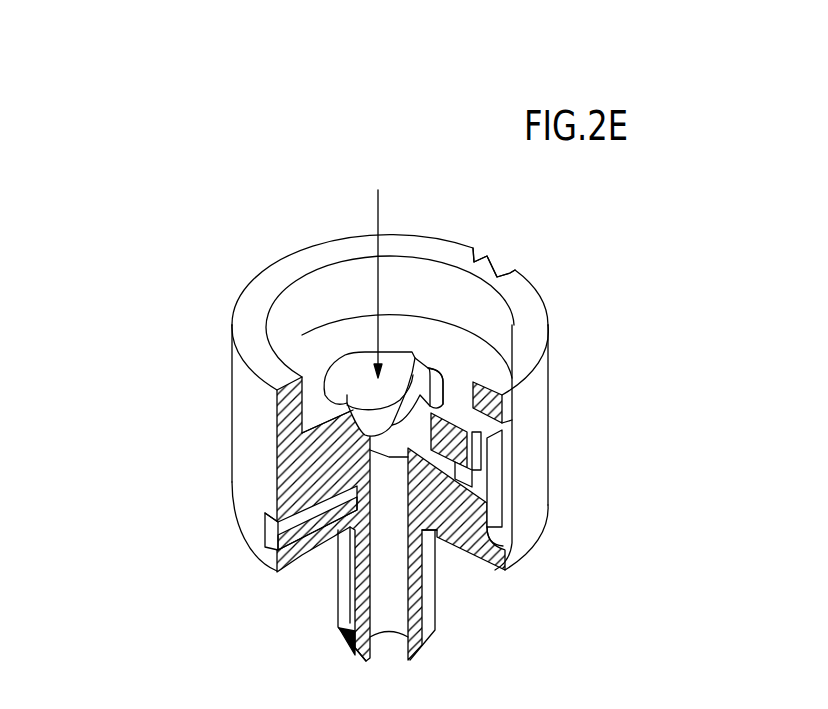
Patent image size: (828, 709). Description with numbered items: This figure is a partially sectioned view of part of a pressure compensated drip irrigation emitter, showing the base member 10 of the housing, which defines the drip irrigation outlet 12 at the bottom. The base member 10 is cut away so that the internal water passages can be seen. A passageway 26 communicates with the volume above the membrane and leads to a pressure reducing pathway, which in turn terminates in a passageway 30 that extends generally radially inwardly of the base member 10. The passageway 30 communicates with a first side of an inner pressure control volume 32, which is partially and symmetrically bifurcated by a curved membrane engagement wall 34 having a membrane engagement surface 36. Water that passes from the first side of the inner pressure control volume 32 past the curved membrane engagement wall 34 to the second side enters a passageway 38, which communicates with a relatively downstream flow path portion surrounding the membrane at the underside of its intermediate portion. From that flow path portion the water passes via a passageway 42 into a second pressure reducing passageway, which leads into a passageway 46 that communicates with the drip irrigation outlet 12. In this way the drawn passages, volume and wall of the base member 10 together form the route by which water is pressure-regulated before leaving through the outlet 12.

The base member 10 is at (199, 550).
The drip irrigation outlet 12 is at (353, 570).
The passageway 26 is at (498, 267).
The passageway 30 is at (360, 394).
The inner pressure control volume 32 is at (376, 267).
The curved membrane engagement wall 34 is at (377, 455).
The membrane engagement surface 36 is at (425, 375).
The passageway 38 is at (450, 547).
The passageway 42 is at (502, 477).
The passageway 46 is at (311, 533).